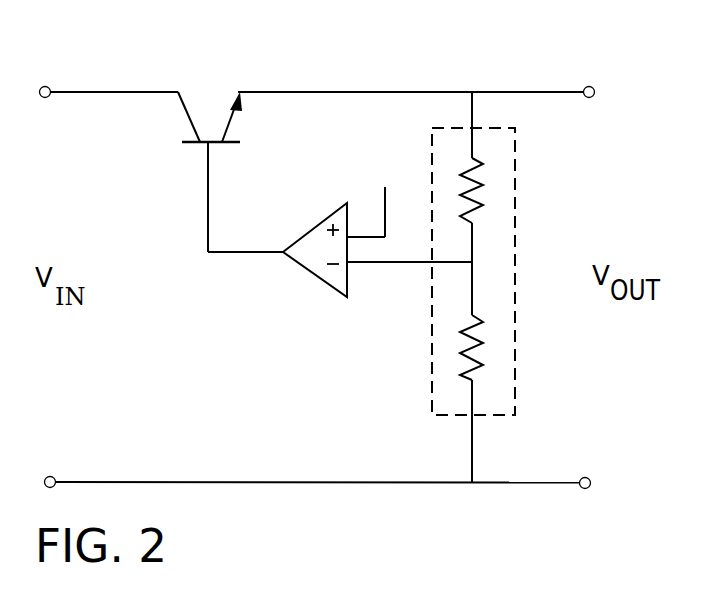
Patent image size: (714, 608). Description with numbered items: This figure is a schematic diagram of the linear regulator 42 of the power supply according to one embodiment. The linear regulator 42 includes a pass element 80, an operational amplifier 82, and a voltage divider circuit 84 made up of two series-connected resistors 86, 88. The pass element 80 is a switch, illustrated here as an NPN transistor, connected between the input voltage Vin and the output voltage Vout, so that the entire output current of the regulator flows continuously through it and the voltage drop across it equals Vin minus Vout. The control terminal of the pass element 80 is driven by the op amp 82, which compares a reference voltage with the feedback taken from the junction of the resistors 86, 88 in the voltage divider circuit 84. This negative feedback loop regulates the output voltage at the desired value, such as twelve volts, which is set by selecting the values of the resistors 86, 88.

The linear regulator 42 is at (488, 70).
The pass element 80 is at (180, 123).
The operational amplifier 82 is at (309, 271).
The voltage divider circuit 84 is at (515, 363).
The resistor 86 is at (482, 183).
The resistor 88 is at (472, 377).